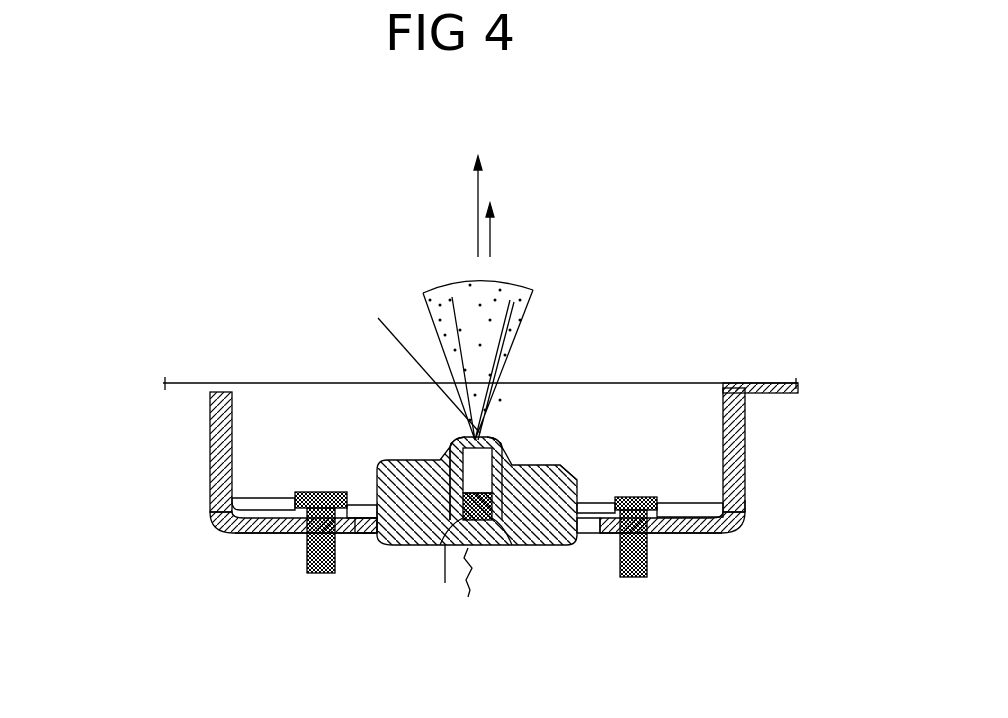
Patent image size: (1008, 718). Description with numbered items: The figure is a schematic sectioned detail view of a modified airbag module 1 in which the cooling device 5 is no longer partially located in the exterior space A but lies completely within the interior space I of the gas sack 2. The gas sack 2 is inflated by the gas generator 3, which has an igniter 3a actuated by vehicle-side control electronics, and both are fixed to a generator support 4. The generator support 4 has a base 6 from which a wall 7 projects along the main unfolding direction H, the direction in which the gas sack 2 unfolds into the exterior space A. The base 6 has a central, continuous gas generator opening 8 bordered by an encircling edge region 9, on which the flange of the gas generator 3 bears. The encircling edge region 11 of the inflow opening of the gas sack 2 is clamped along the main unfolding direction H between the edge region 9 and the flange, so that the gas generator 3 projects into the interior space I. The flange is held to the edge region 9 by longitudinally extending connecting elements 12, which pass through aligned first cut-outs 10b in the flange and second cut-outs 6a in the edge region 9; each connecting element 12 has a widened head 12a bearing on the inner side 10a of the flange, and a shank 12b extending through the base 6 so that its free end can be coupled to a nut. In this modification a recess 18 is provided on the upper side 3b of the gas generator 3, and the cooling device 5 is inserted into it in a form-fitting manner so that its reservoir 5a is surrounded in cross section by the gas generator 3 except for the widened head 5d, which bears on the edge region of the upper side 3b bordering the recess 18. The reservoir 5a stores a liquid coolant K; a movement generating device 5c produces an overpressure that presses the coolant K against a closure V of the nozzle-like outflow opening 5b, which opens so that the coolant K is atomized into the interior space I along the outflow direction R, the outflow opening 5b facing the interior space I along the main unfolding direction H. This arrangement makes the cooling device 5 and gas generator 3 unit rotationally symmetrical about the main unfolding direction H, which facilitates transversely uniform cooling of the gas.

The airbag module 1 is at (782, 440).
The gas sack 2 is at (772, 386).
The gas generator 3 is at (532, 545).
The igniter 3a is at (470, 555).
The upper side of the gas generator 3b is at (567, 467).
The generator support 4 is at (733, 528).
The cooling device 5 is at (493, 467).
The reservoir 5a is at (450, 475).
The outflow opening 5b is at (497, 430).
The movement generating device 5c is at (455, 543).
The head of the cooling device 5d is at (455, 475).
The base 6 is at (247, 535).
The second cut-outs 6a is at (280, 537).
The wall 7 is at (208, 472).
The gas generator opening 8 is at (372, 528).
The edge region of the gas generator opening 9 is at (595, 535).
The inner side of the flange 10a is at (592, 503).
The first cut-outs 10b is at (217, 522).
The edge region of the inflow opening 11 is at (217, 533).
The connecting elements 12 is at (303, 557).
The widened head 12a is at (312, 492).
The bolt shank 12b is at (315, 570).
The recess 18 is at (498, 535).
The main unfolding direction H is at (478, 197).
The outflow direction R is at (505, 233).
The liquid coolant K is at (496, 322).
The closure V is at (417, 362).
The interior space I is at (632, 375).
The exterior space A is at (88, 458).